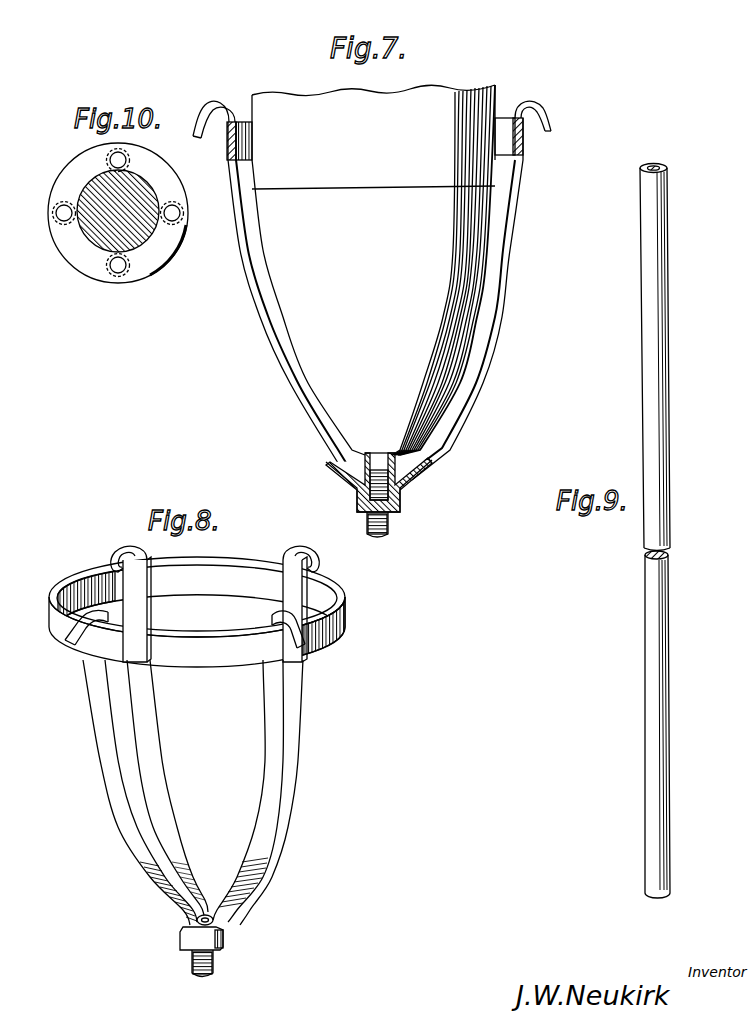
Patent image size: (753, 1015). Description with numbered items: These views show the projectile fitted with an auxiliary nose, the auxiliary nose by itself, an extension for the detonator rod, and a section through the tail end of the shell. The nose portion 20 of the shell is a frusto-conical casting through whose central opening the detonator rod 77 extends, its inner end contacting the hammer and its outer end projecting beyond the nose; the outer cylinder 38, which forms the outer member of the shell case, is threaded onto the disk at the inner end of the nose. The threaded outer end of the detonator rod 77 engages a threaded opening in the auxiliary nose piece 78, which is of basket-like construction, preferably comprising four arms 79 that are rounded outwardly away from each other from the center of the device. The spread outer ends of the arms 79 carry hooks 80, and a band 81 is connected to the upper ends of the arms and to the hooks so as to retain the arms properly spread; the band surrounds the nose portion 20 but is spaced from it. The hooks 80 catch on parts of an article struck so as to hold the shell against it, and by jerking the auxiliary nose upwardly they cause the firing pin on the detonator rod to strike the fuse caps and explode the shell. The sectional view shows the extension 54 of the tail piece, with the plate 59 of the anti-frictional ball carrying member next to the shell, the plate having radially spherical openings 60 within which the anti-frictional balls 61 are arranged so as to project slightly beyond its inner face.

In FIG. 7, the nose portion 20 is at (484, 243).
In FIG. 7, the cylinder 38 is at (492, 103).
In FIG. 10, the extension 54 is at (87, 182).
In FIG. 10, the plate 59 is at (170, 173).
In FIG. 10, the openings 60 is at (127, 265).
In FIG. 10, the anti-frictional balls 61 is at (117, 270).
In FIG. 7, the detonator rod 77 is at (390, 470).
In FIG. 7, the auxiliary nose piece 78 is at (507, 312).
In FIG. 8, the auxiliary nose piece 78 is at (318, 669).
In FIG. 7, the arms 79 is at (482, 380).
In FIG. 8, the arms 79 is at (278, 750).
In FIG. 7, the hooks 80 is at (550, 117).
In FIG. 8, the hooks 80 is at (330, 563).
In FIG. 7, the band 81 is at (505, 113).
In FIG. 8, the band 81 is at (238, 570).